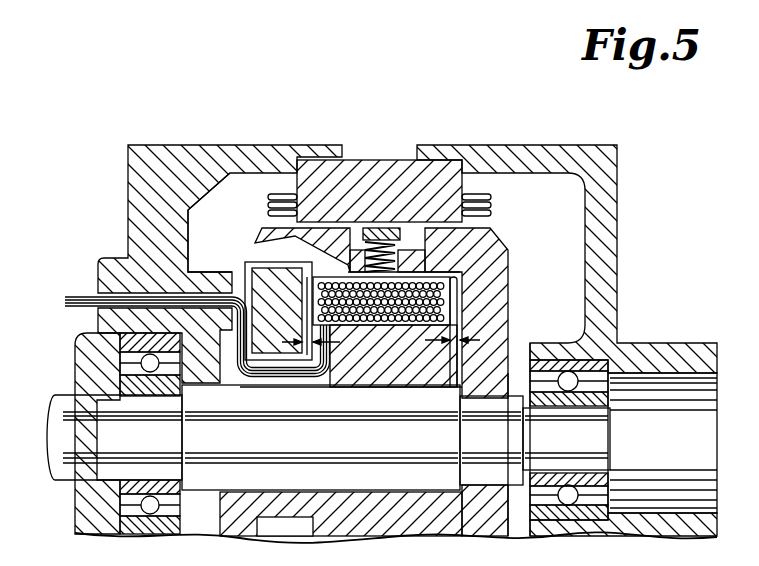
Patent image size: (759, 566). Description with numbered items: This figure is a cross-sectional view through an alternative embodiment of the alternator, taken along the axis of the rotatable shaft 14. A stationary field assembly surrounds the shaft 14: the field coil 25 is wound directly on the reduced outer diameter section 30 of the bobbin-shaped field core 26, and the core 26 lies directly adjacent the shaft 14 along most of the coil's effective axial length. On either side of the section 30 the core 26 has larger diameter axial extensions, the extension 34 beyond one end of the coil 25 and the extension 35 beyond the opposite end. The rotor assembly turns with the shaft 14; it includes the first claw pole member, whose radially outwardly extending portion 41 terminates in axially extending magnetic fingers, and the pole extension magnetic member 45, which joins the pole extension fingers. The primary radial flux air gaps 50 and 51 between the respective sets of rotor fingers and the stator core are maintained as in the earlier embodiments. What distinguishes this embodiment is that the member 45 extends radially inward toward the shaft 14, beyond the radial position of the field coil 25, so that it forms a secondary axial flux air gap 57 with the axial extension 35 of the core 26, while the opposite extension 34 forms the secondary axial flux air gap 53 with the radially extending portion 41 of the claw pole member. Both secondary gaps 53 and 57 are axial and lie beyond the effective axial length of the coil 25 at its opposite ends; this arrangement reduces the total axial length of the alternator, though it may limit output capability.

The rotatable shaft 14 is at (68, 400).
The field coil 25 is at (468, 270).
The field core 26 is at (408, 366).
The reduced outer diameter section 30 is at (379, 333).
The axial cylindrical end extension 34 is at (458, 300).
The axial extension 35 is at (304, 288).
The radially outwardly extending portion 41 is at (498, 276).
The pole extension magnetic member 45 is at (258, 276).
The primary radial flux air gap 50 is at (444, 250).
The primary radial flux air gap 51 is at (316, 250).
The axial flux air gap 53 is at (503, 340).
The secondary axial flux air gap 57 is at (303, 333).